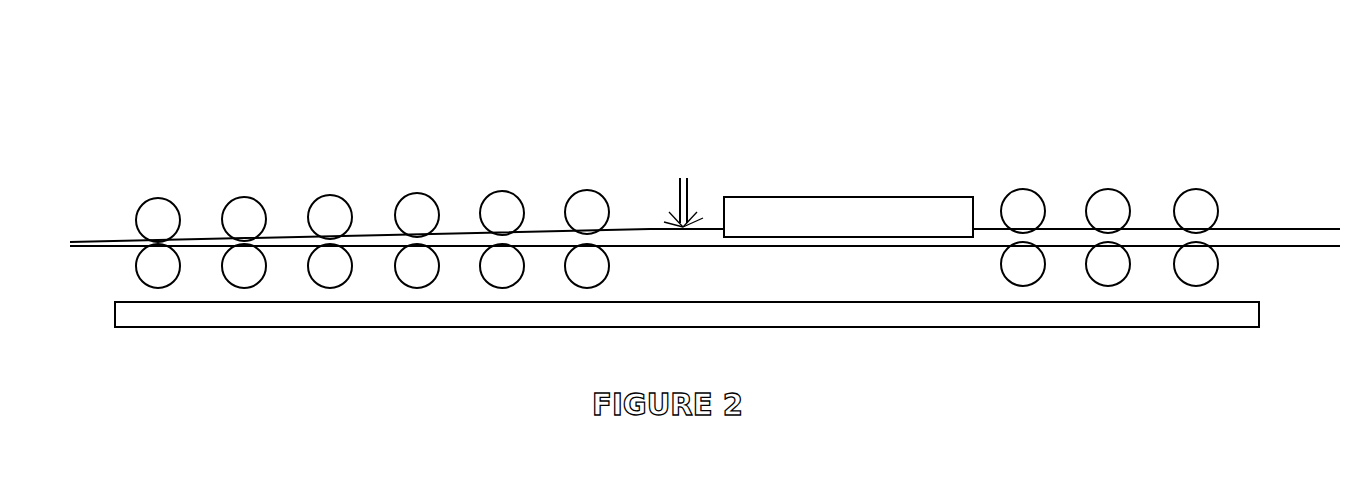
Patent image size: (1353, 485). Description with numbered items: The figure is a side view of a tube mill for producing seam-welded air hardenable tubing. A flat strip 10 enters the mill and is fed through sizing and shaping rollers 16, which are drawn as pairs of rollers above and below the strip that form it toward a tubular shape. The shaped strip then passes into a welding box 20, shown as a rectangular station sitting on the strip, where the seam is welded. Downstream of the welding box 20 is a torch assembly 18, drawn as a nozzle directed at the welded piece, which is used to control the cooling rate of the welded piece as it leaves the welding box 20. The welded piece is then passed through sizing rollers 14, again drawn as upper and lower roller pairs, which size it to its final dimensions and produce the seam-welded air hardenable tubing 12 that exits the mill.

The strip 10 is at (90, 243).
The seam-welded air hardenable tubing 12 is at (1305, 237).
The sizing rollers 14 is at (318, 138).
The sizing and shaping rollers 16 is at (1163, 147).
The torch assembly 18 is at (680, 190).
The welding box 20 is at (863, 197).